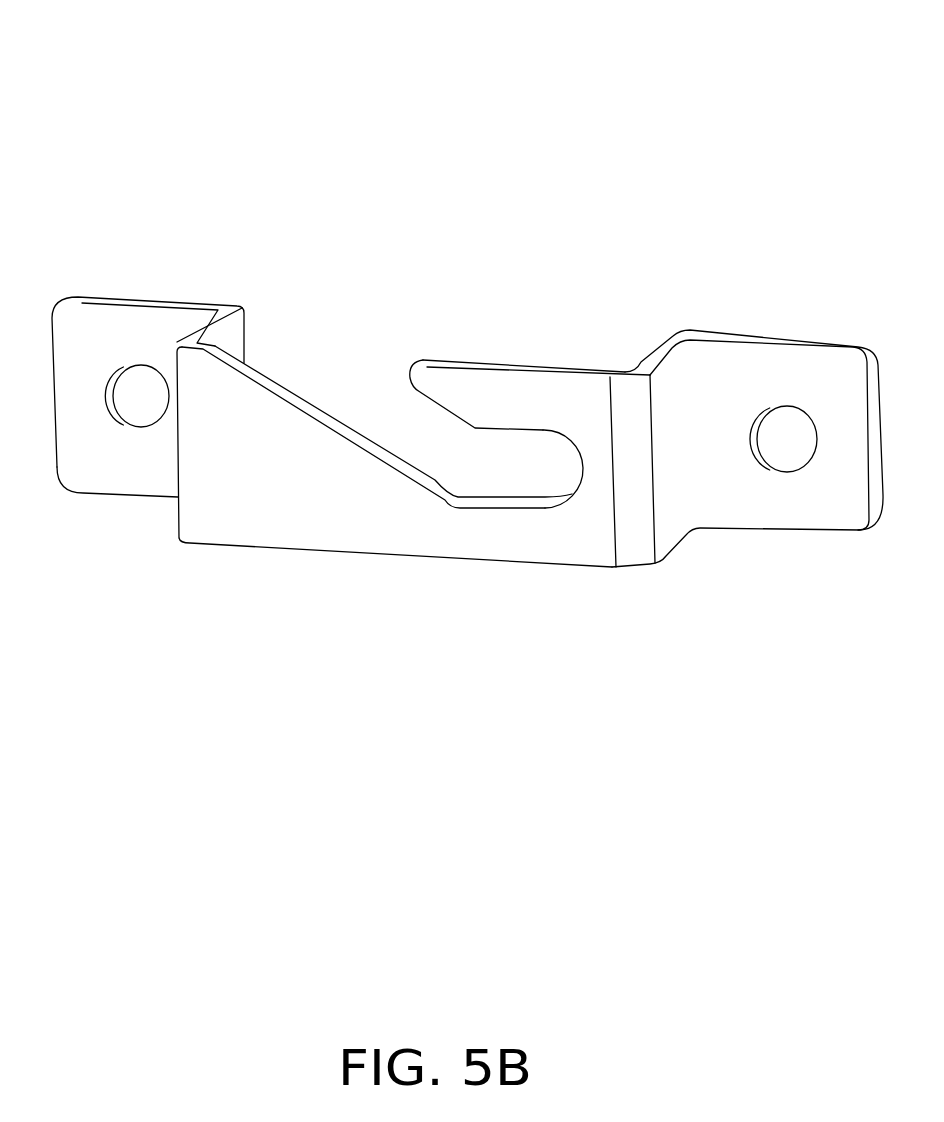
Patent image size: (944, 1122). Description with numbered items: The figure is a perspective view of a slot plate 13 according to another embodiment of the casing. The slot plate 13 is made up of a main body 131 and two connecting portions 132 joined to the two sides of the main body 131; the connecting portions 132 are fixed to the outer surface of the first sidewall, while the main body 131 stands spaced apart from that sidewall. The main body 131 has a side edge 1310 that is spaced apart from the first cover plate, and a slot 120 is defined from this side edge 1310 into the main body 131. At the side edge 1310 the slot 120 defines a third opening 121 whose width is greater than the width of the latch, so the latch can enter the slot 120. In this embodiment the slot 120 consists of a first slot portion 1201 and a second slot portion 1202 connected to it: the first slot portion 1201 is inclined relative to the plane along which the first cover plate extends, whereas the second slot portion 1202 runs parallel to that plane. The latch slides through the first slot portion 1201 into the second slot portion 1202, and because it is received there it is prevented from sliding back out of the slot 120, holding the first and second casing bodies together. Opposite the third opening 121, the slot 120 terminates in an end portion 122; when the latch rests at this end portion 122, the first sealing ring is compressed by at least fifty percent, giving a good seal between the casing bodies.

The slot plate 13 is at (203, 95).
The slot 120 is at (540, 263).
The first slot portion 1201 is at (360, 410).
The second slot portion 1202 is at (503, 470).
The third opening 121 is at (327, 363).
The end portion 122 is at (577, 472).
The main body 131 is at (257, 518).
The connecting portion 132 is at (110, 467).
The side edge 1310 is at (580, 372).